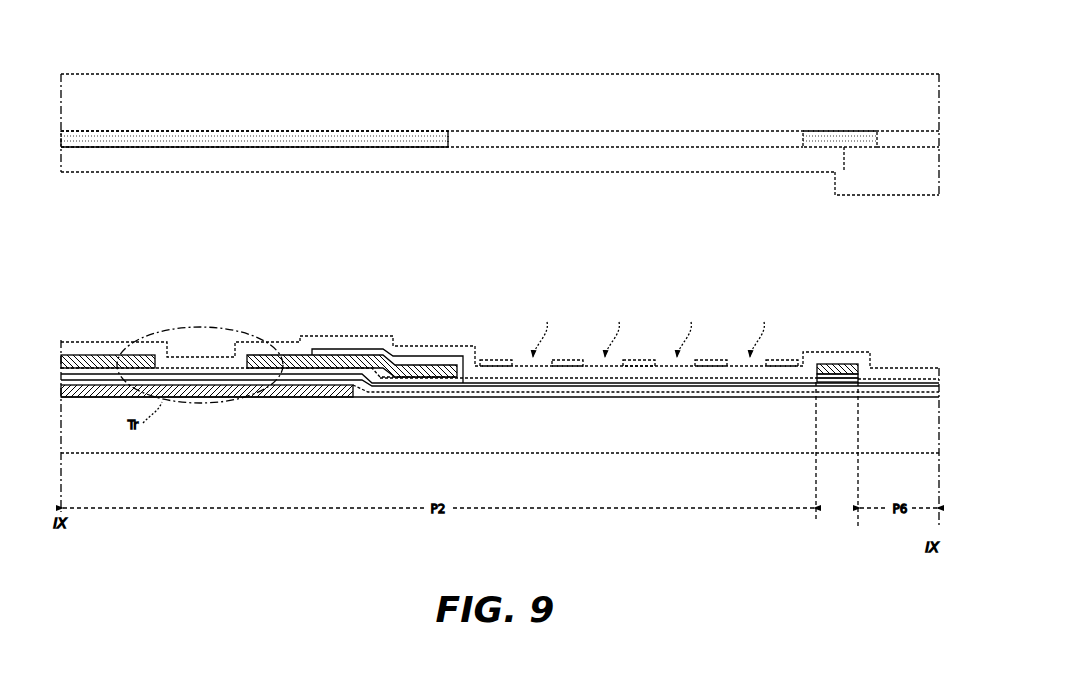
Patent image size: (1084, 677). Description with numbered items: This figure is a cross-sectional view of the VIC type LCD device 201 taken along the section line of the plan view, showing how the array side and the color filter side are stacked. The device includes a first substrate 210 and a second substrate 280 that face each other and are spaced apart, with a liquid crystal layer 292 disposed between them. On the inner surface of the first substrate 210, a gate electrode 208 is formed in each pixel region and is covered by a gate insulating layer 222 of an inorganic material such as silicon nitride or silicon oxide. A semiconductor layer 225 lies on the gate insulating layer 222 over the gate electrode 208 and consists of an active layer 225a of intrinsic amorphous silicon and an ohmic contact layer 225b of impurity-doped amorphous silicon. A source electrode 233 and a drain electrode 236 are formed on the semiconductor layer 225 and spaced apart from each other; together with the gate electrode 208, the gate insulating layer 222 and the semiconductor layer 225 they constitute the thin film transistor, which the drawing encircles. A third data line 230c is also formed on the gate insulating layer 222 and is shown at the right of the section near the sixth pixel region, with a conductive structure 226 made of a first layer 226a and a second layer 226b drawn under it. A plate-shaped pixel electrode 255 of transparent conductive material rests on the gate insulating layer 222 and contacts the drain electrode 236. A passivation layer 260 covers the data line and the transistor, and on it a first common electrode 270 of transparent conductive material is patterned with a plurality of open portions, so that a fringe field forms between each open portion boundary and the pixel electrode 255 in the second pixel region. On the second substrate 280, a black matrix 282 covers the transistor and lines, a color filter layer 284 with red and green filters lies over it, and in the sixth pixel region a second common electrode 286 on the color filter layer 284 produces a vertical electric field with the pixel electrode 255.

The VIC type LCD device 201 is at (850, 56).
The second substrate 280 is at (937, 107).
The black matrix 282 is at (242, 132).
The color filter layer 284 is at (360, 153).
The second common electrode 286 is at (870, 198).
The liquid crystal layer 292 is at (104, 242).
The first substrate 210 is at (903, 445).
The gate electrode 208 is at (200, 396).
The gate insulating layer 222 is at (496, 393).
The semiconductor layer 225 is at (500, 411).
The active layer 225a is at (313, 375).
The ohmic contact layer 225b is at (340, 381).
The source electrode 233 is at (118, 355).
The drain electrode 236 is at (311, 349).
The pixel electrode 255 is at (566, 386).
The passivation layer 260 is at (616, 372).
The first common electrode 270 is at (497, 359).
The third data line 230c is at (836, 364).
The pad conductive layer 226 is at (851, 409).
The first pad layer 226a is at (828, 379).
The second pad layer 226b is at (851, 383).